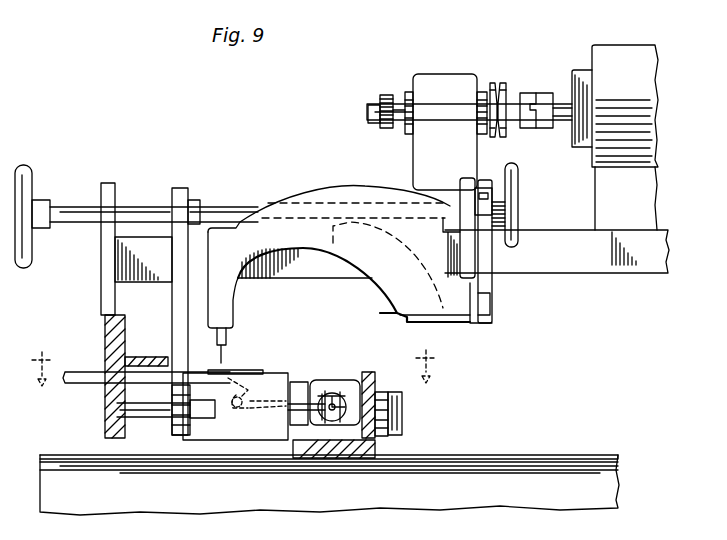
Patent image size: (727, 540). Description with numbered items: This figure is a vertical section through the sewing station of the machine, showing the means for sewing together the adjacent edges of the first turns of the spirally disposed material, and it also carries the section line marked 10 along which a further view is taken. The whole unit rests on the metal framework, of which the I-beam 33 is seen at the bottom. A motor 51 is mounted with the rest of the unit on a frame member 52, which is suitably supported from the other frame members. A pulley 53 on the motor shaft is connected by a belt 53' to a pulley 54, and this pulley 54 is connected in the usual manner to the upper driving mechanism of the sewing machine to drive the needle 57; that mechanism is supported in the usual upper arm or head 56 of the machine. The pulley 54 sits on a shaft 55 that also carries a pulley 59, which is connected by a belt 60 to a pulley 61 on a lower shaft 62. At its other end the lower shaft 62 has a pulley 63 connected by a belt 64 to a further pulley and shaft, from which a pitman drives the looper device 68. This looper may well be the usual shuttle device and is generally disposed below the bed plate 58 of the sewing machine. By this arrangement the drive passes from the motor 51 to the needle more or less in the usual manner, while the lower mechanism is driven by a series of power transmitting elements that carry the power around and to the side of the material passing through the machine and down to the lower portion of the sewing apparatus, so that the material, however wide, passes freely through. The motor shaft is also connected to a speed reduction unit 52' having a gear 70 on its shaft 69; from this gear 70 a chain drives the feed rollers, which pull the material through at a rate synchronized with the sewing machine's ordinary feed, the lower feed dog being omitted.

The section line 10 is at (240, 377).
The I-beam 33 is at (560, 462).
The motor 51 is at (650, 128).
The frame member 52 is at (557, 266).
The speed reduction unit 52' is at (446, 117).
The pulley 53 is at (507, 94).
The belt 53' is at (537, 127).
The pulley 54 is at (506, 205).
The shaft 55 is at (262, 206).
The upper arm or head 56 is at (323, 240).
The needle 57 is at (225, 353).
The bed plate 58 is at (258, 373).
The pulley 59 is at (170, 190).
The belt 60 is at (175, 310).
The pulley 61 is at (173, 428).
The lower shaft 62 is at (222, 412).
The pulley 63 is at (400, 406).
The belt 64 is at (400, 422).
The looper device 68 is at (286, 372).
The shaft 69 is at (368, 110).
The gear 70 is at (384, 130).